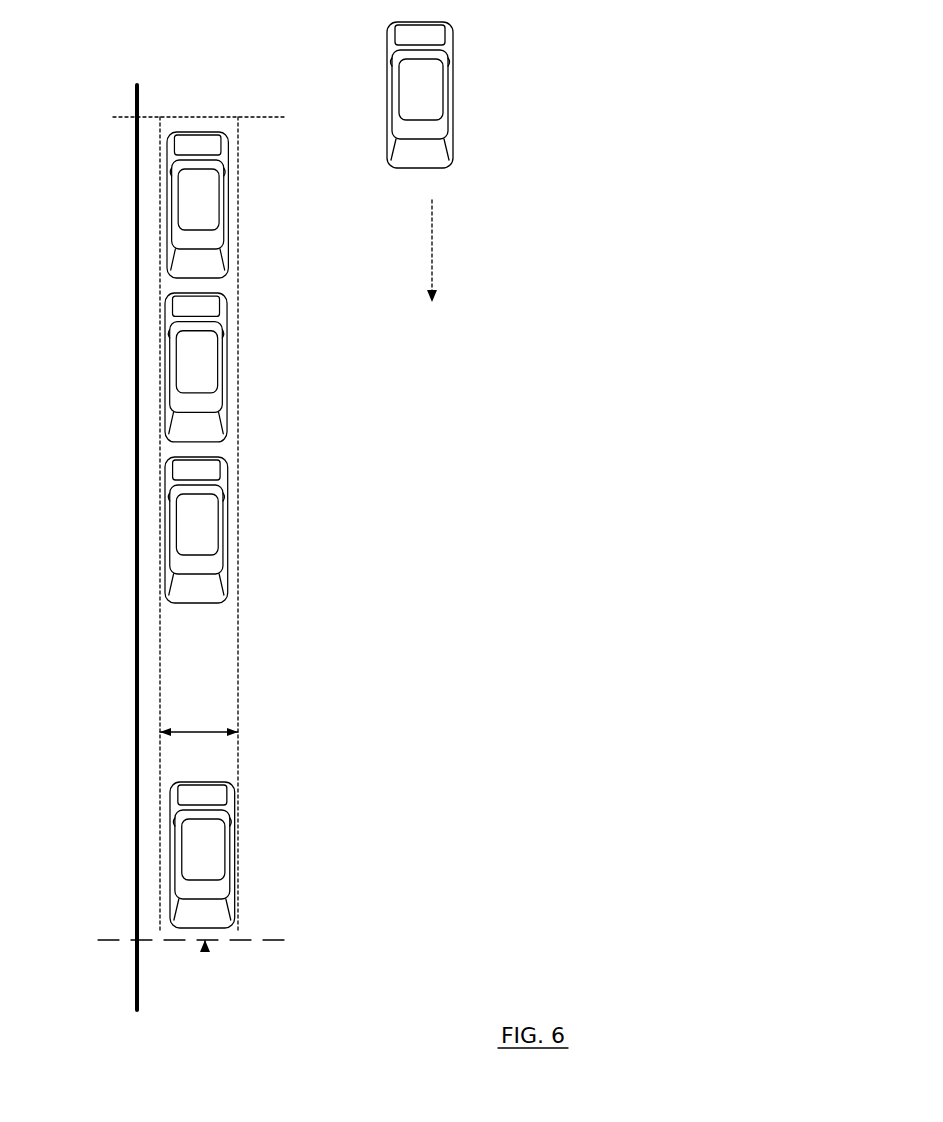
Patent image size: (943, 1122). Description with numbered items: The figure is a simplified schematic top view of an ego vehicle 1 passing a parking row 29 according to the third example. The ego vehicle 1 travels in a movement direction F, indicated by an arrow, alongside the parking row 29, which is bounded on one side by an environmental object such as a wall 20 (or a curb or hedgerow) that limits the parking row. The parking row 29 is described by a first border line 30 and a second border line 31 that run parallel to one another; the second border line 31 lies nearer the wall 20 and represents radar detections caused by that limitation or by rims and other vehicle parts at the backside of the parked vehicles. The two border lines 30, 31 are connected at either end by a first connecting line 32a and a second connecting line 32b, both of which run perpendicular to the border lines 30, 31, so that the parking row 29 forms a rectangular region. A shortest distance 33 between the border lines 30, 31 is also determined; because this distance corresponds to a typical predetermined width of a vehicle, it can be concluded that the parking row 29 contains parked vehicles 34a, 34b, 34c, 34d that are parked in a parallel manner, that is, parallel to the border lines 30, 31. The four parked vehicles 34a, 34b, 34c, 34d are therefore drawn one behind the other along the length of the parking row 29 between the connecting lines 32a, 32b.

The ego vehicle 1 is at (420, 88).
The wall 20 is at (137, 477).
The parking row 29 is at (205, 948).
The first border line 30 is at (240, 647).
The second border line 31 is at (160, 608).
The first connecting line 32a is at (210, 115).
The second connecting line 32b is at (275, 937).
The shortest distance 33 is at (207, 733).
The parked vehicle 34a is at (203, 200).
The parked vehicle 34b is at (203, 360).
The parked vehicle 34c is at (202, 523).
The parked vehicle 34d is at (212, 857).
The movement direction F is at (432, 262).